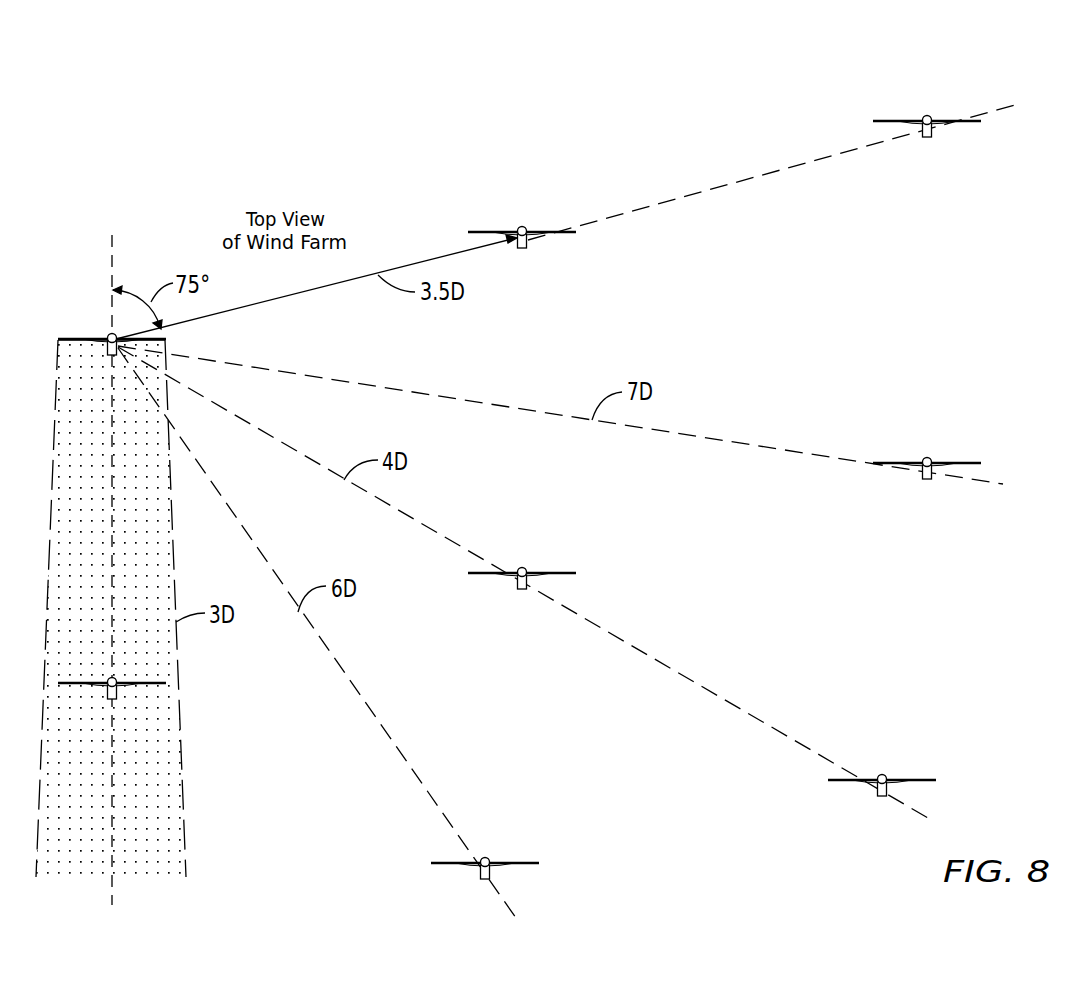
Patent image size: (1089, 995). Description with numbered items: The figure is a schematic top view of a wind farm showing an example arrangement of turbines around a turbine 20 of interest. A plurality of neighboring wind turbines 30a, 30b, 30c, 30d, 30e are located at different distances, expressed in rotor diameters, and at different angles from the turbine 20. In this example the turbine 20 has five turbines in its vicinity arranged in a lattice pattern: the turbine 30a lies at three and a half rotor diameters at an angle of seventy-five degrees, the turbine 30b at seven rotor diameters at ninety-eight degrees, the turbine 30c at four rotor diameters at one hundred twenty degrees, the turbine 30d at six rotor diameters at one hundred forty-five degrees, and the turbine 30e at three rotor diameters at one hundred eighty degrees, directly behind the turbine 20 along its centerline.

The turbine of interest 20 is at (88, 338).
The wind turbine 30a is at (565, 233).
The wind turbine 30b is at (960, 463).
The wind turbine 30c is at (558, 573).
The wind turbine 30d is at (518, 863).
The wind turbine 30e is at (143, 685).